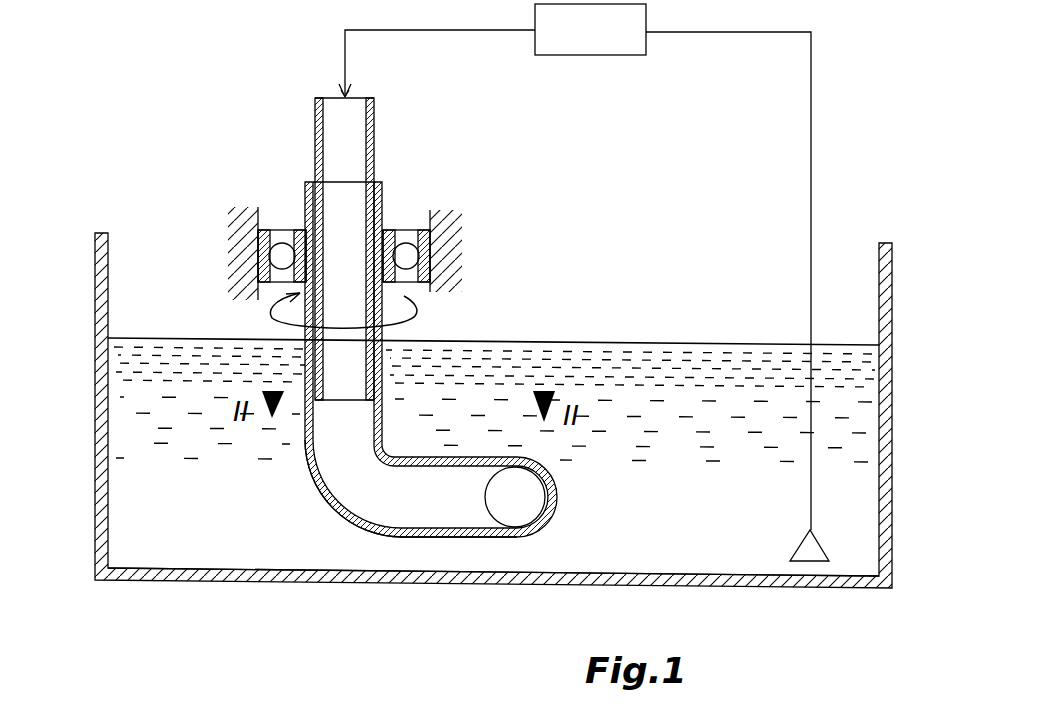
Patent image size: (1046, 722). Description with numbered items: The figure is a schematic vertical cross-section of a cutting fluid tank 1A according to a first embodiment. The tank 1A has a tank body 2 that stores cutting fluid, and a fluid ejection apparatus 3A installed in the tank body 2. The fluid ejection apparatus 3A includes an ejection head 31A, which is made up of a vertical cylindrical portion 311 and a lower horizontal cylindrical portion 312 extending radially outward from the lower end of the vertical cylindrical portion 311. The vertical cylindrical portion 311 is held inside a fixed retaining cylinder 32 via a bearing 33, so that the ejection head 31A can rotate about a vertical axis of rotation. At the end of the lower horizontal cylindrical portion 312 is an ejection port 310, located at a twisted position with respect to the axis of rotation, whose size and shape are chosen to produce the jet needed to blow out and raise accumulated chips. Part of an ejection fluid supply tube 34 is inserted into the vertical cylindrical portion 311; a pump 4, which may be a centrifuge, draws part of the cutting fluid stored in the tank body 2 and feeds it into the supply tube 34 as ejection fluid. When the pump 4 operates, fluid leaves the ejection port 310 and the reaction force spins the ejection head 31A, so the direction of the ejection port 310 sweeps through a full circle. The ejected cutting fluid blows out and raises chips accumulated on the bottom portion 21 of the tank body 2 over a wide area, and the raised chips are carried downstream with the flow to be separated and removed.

The cutting fluid tank 1A is at (135, 200).
The tank body 2 is at (245, 582).
The bottom portion 21 is at (470, 588).
The fluid ejection apparatus 3A is at (410, 180).
The ejection head 31A is at (322, 504).
The ejection port 310 is at (547, 497).
The vertical cylindrical portion 311 is at (310, 184).
The lower horizontal cylindrical portion 312 is at (415, 537).
The fixed retaining cylinder 32 is at (455, 262).
The bearing 33 is at (278, 230).
The ejection fluid supply tube 34 is at (315, 140).
The pump 4 is at (636, 56).